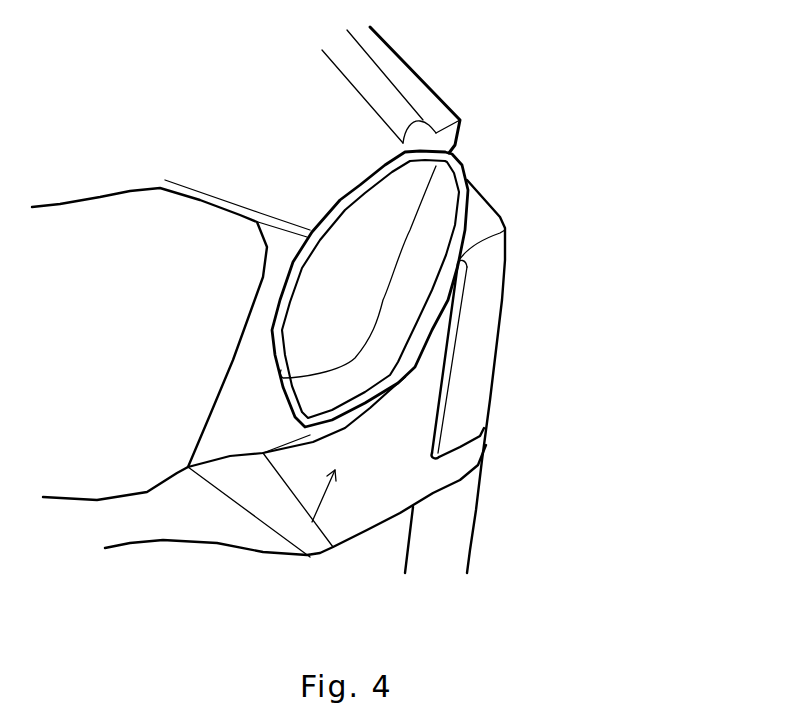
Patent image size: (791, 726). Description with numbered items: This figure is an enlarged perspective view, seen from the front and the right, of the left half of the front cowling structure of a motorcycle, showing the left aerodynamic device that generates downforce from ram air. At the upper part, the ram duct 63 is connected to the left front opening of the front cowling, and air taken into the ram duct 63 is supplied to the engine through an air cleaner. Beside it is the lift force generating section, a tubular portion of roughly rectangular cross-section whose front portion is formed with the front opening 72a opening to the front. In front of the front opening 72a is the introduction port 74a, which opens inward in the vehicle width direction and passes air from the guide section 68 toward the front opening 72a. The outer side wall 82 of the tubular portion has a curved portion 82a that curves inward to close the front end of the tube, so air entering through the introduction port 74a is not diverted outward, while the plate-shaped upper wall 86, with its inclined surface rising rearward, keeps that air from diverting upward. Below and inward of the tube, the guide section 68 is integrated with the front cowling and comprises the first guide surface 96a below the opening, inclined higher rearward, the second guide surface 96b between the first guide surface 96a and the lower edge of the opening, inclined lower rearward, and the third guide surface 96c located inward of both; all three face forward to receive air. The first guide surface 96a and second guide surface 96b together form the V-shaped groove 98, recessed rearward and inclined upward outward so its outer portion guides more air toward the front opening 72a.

The ram duct 63 is at (405, 215).
The upper wall 86 is at (519, 182).
The outer side wall 82 is at (539, 376).
The front opening 72a is at (526, 359).
The curved portion 82a is at (523, 437).
The introduction port 74a is at (486, 500).
The V-shaped groove 98 is at (309, 512).
The first guide surface 96a is at (323, 551).
The guide section 68 is at (311, 562).
The third guide surface 96c is at (249, 558).
The second guide surface 96b is at (230, 533).